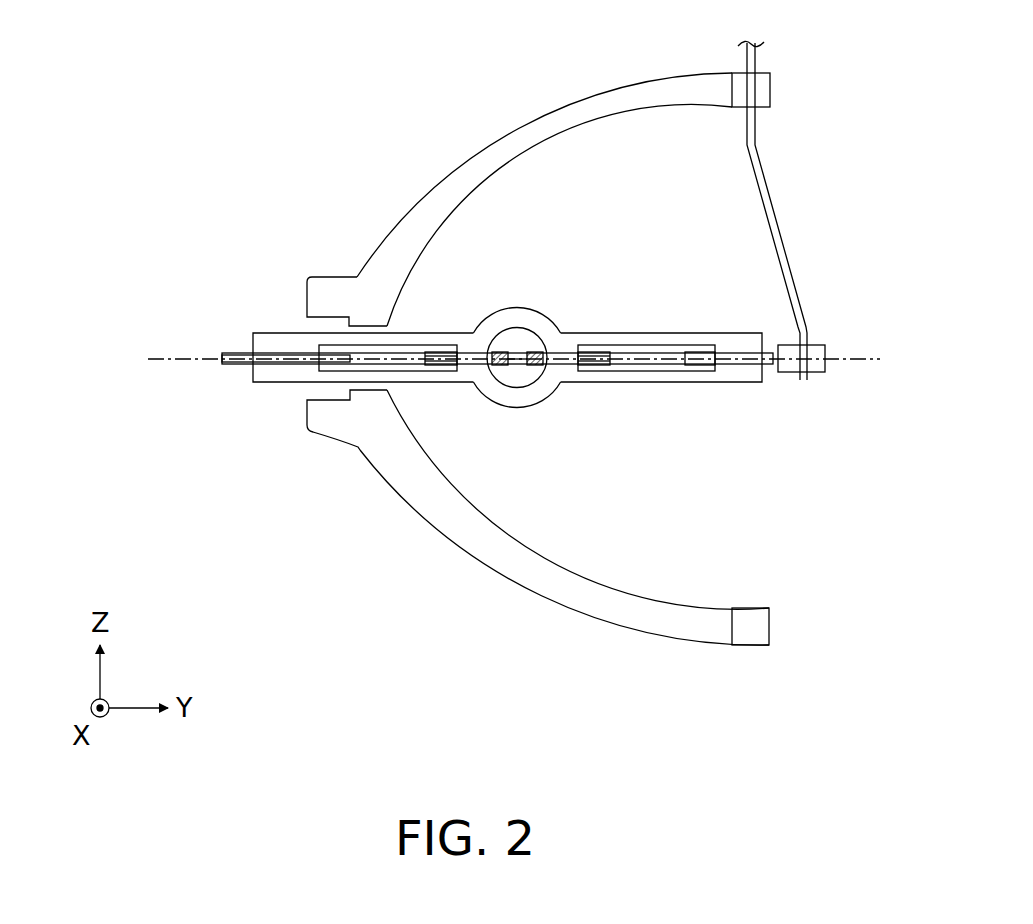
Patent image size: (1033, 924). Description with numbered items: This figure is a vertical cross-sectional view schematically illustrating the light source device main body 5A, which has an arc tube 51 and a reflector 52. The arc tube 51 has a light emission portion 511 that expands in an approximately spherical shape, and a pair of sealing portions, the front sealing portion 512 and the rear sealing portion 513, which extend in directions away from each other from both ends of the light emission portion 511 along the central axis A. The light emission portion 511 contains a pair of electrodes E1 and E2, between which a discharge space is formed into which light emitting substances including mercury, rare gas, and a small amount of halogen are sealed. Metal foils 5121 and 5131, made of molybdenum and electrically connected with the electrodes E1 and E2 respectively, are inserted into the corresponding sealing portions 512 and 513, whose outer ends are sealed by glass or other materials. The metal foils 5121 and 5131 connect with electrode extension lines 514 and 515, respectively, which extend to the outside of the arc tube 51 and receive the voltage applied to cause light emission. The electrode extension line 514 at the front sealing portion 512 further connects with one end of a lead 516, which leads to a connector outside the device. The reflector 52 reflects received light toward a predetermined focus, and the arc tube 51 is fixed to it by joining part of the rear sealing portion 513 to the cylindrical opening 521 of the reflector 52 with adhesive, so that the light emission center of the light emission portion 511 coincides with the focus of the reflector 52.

The light source device main body 5A is at (508, 84).
The reflector 52 is at (445, 176).
The cylindrical opening 521 is at (347, 342).
The light emission portion 511 is at (517, 308).
The rear sealing portion 513 is at (445, 333).
The metal foil 5131 is at (418, 372).
The front sealing portion 512 is at (650, 333).
The metal foil 5121 is at (634, 372).
The electrode extension line 515 is at (238, 367).
The electrode extension line 514 is at (770, 385).
The lead 516 is at (778, 215).
The electrode E1 is at (530, 366).
The electrode E2 is at (505, 366).
The rotation axis A is at (855, 352).
The arc tube 51 is at (582, 446).